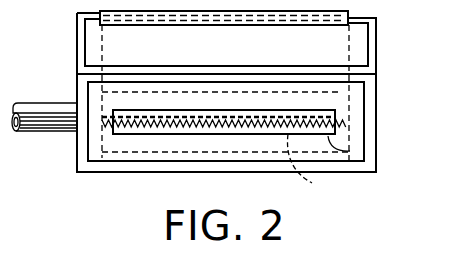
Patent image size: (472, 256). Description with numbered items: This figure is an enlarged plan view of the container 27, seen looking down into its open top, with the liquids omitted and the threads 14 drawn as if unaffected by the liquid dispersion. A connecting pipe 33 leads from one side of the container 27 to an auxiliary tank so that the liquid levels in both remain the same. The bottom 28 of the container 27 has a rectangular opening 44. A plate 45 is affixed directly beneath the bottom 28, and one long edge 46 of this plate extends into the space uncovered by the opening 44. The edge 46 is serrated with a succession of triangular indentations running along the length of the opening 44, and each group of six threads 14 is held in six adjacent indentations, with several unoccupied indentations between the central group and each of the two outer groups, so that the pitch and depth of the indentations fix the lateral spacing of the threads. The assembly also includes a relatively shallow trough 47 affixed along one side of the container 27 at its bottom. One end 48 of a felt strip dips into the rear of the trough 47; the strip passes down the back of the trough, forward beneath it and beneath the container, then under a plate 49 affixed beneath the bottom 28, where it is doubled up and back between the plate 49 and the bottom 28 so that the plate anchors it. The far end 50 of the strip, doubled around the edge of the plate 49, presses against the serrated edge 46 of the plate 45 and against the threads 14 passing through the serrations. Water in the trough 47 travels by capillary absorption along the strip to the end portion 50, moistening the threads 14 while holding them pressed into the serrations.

The threads 14 is at (293, 128).
The container 27 is at (368, 120).
The bottom wall 28 is at (354, 133).
The connecting pipe 33 is at (29, 106).
The rectangular opening 44 is at (350, 151).
The plate 45 is at (293, 128).
The serrated edge 46 is at (197, 127).
The trough 47 is at (358, 38).
The end of felt strip 48 is at (313, 27).
The plate 49 is at (326, 102).
The far end of felt strip 50 is at (293, 128).